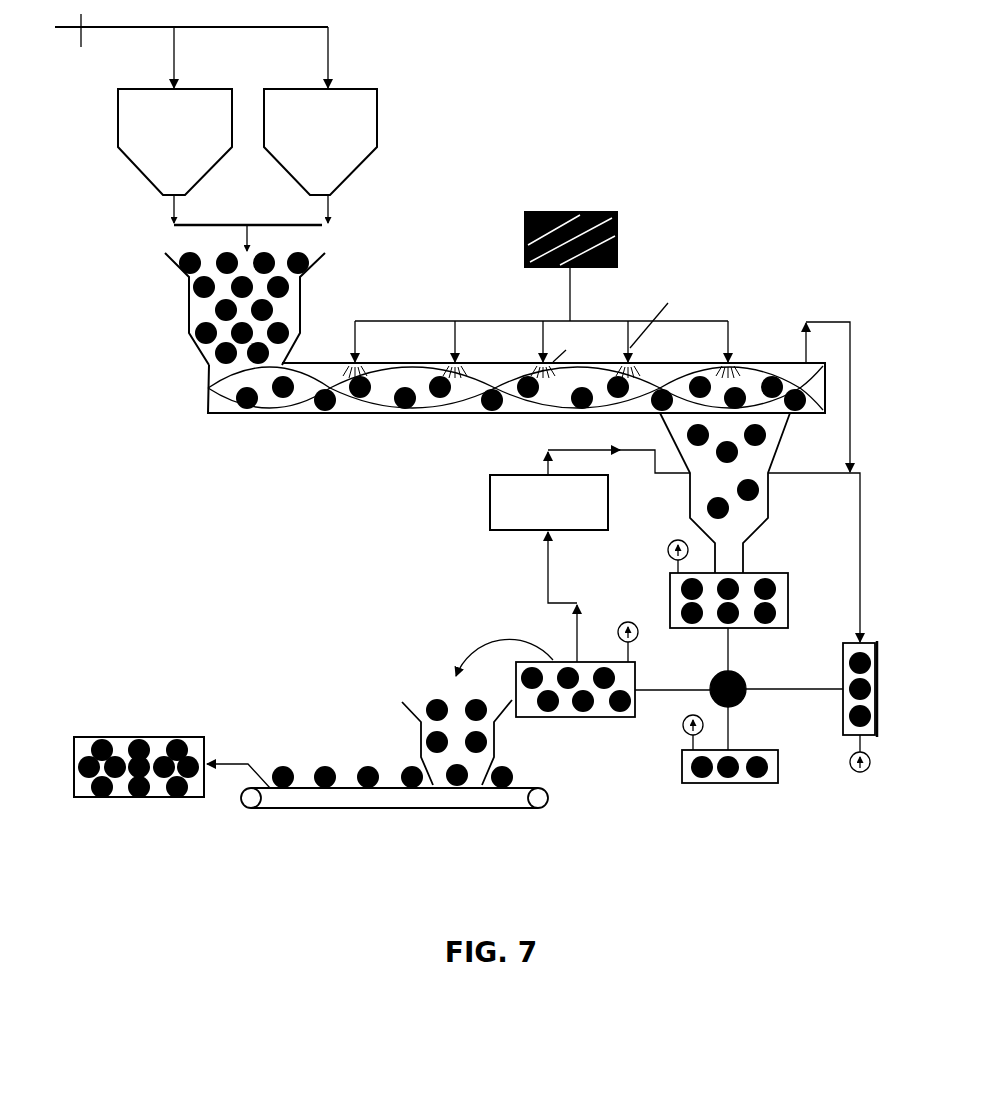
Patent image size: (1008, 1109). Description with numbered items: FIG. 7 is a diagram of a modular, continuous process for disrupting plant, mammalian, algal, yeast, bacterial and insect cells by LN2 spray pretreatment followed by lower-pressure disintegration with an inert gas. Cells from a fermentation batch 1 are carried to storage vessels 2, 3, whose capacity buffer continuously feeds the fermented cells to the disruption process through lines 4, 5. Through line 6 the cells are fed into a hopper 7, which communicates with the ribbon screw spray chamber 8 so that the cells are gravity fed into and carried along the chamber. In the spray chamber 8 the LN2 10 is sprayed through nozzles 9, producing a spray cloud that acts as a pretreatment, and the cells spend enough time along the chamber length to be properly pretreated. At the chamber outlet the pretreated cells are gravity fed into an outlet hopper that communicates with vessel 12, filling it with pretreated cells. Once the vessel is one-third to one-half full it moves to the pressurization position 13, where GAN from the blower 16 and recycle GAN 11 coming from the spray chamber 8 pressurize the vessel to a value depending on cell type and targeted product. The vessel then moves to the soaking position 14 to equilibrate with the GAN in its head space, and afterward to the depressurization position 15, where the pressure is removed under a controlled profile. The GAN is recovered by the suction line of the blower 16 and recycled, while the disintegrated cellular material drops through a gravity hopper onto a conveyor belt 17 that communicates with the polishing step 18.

The fermentation batch 1 is at (191, 45).
The storage vessel 2 is at (175, 111).
The storage vessel 3 is at (320, 111).
The line 4 is at (193, 209).
The line 5 is at (345, 209).
The line 6 is at (248, 239).
The hopper 7 is at (189, 330).
The spray chamber 8 is at (315, 413).
The nozzles 9 is at (543, 340).
The LN2 10 is at (617, 227).
The recycle GAN 11 is at (814, 460).
The vessel 12 is at (753, 573).
The pressurization position 13 is at (843, 700).
The soaking position 14 is at (702, 783).
The depressurization position 15 is at (582, 662).
The blower 16 is at (490, 493).
The conveyor belt 17 is at (523, 788).
The polishing step 18 is at (90, 737).